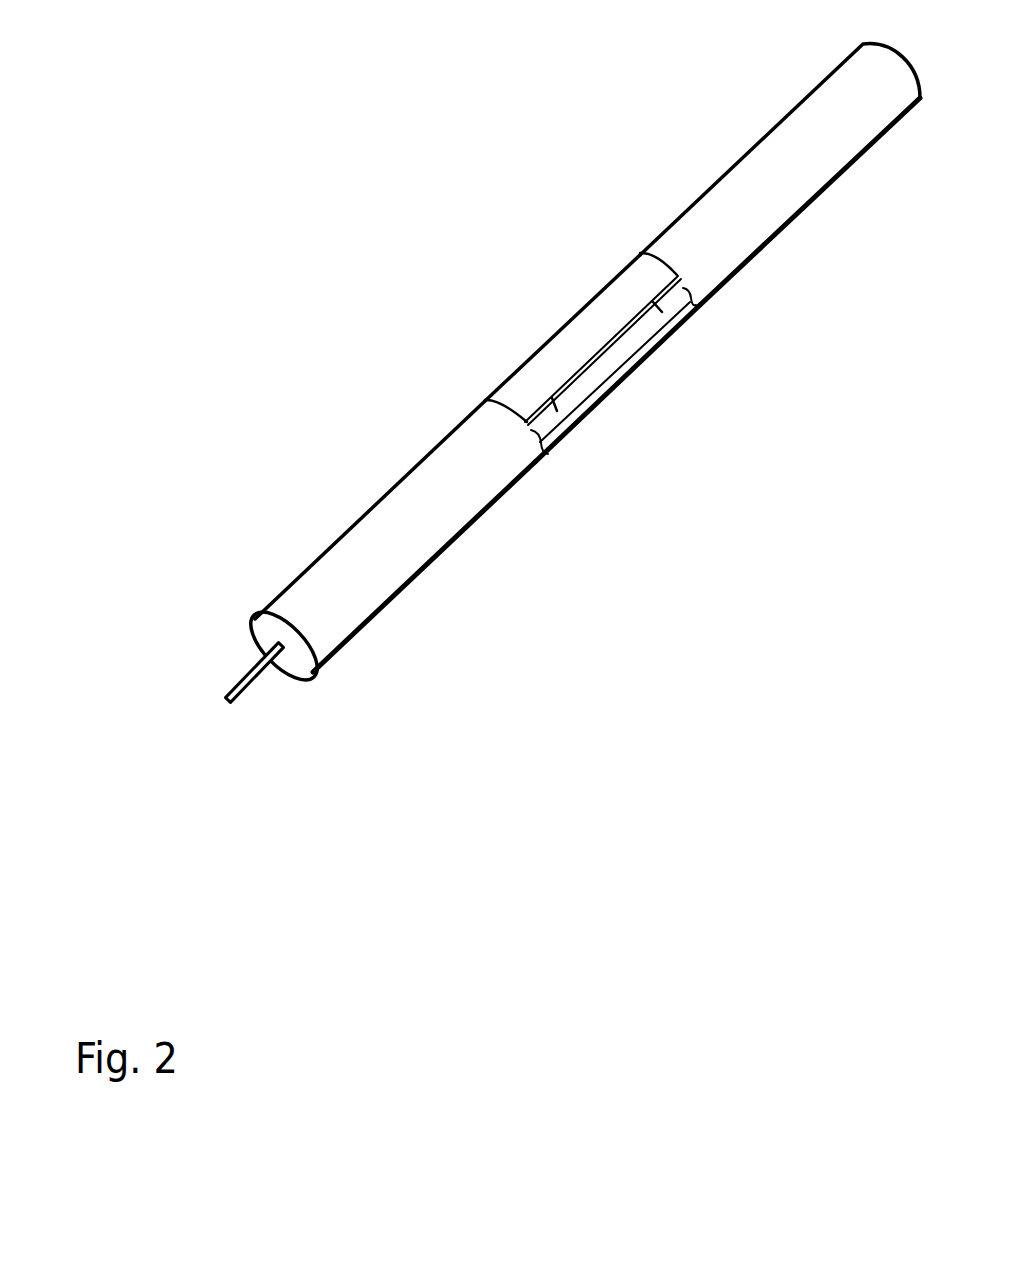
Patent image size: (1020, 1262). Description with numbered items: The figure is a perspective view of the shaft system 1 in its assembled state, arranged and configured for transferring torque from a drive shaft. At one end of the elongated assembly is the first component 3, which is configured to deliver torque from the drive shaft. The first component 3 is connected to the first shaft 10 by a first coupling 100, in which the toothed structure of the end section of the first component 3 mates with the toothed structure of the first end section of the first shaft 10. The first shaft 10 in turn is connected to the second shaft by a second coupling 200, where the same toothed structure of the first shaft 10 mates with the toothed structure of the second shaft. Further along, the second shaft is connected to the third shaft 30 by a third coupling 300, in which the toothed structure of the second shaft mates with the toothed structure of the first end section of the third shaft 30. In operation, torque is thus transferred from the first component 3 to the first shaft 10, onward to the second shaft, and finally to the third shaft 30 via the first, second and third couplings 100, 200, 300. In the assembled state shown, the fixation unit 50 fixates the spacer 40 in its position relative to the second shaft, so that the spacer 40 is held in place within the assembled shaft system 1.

The shaft system 1 is at (232, 268).
The first component 3 is at (267, 635).
The first shaft 10 is at (352, 570).
The third shaft 30 is at (763, 212).
The spacer 40 is at (578, 380).
The fixation unit 50 is at (557, 347).
The first coupling 100 is at (322, 716).
The second coupling 200 is at (558, 492).
The third coupling 300 is at (688, 364).